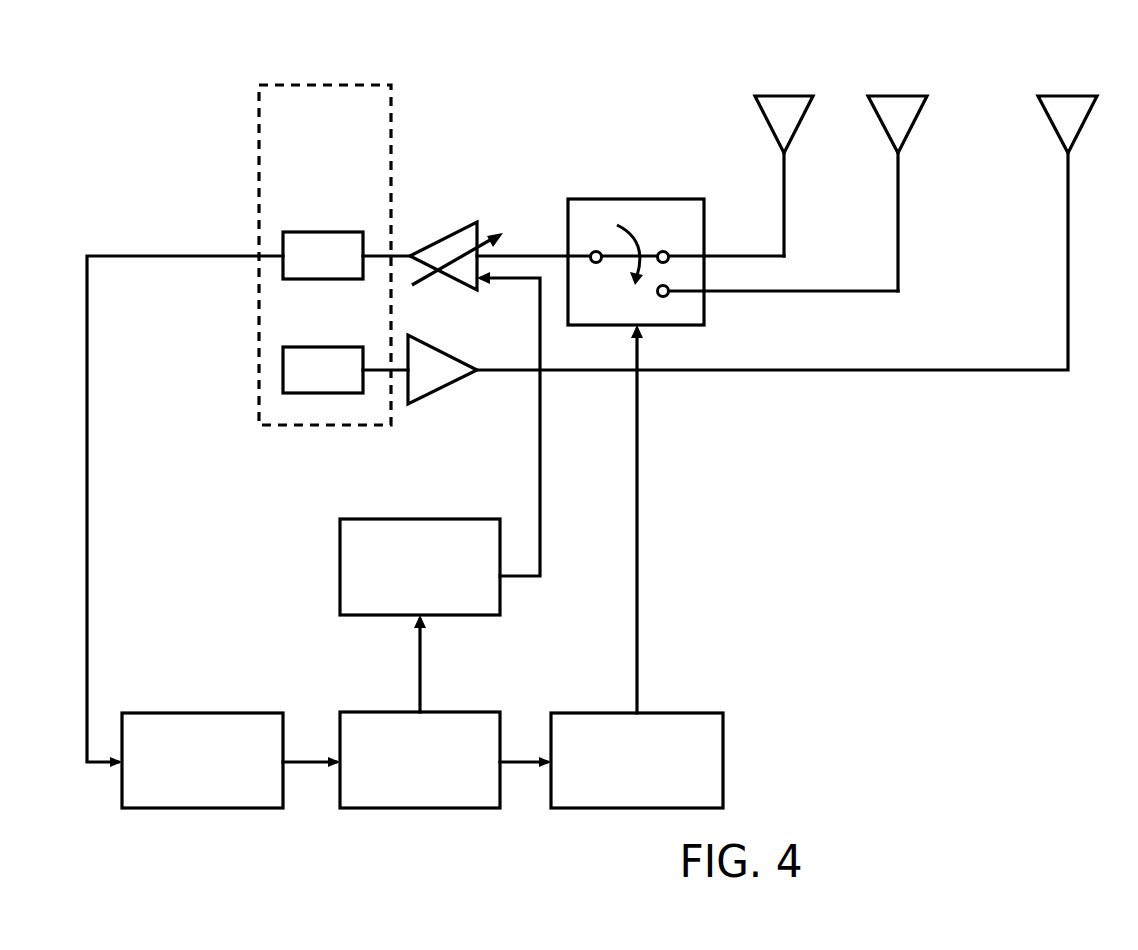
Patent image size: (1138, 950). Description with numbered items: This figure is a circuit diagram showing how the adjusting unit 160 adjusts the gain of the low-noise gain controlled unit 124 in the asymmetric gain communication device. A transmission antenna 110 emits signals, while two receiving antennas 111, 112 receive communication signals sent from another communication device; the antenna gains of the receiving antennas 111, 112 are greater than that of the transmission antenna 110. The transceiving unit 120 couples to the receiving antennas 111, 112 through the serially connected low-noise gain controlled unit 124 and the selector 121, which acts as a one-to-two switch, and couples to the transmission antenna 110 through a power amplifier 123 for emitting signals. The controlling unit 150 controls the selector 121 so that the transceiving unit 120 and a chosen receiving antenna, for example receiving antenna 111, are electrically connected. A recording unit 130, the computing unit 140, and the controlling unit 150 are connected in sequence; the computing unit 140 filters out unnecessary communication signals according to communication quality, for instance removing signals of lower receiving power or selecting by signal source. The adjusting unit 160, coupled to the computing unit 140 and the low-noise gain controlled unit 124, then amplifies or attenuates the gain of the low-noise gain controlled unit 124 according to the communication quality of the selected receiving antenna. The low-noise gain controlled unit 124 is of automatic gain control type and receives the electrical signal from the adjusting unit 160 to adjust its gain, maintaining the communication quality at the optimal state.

The transmission antenna 110 is at (1065, 96).
The receiving antenna 111 is at (790, 96).
The receiving antenna 112 is at (912, 96).
The transceiving unit 120 is at (313, 85).
The selector 121 is at (590, 199).
The power amplifier 123 is at (458, 382).
The low-noise gain controlled unit 124 is at (432, 235).
The recording unit 130 is at (215, 713).
The computing unit 140 is at (457, 712).
The controlling unit 150 is at (698, 713).
The adjusting unit 160 is at (437, 518).